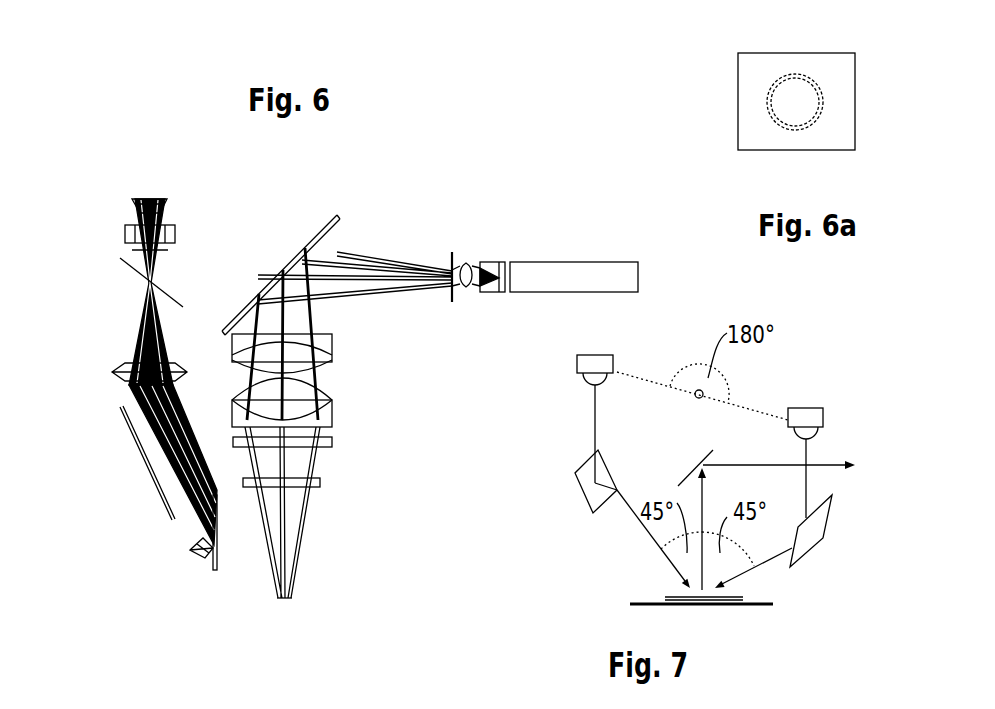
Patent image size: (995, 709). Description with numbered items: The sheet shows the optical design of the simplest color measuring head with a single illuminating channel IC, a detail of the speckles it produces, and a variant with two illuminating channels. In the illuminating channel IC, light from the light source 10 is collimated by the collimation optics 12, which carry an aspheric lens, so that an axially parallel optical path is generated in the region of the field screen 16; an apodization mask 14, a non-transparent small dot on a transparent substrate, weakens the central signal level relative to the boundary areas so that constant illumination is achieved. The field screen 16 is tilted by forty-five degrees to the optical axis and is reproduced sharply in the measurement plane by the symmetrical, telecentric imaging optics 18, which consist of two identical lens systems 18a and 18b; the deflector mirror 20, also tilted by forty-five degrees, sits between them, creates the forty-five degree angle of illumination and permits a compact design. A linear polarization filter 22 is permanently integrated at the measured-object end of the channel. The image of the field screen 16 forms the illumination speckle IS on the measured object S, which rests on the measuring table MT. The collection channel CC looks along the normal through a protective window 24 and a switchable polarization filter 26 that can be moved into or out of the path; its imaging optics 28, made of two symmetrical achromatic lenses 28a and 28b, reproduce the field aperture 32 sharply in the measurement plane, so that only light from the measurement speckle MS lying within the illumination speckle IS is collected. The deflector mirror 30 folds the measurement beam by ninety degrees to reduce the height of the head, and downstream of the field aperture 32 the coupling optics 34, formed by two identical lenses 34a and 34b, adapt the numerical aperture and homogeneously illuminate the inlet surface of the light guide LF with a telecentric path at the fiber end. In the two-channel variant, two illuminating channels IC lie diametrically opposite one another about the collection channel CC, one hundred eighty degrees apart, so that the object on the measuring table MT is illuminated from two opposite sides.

In FIG. 6, the light source 10 is at (132, 203).
In FIG. 6, the collimation optics 12 is at (125, 237).
In FIG. 6, the apodization mask 14 is at (167, 226).
In FIG. 6, the field screen 16 is at (127, 268).
In FIG. 6, the telecentric imaging optics 18 is at (215, 497).
In FIG. 6, the lens system 18a is at (128, 364).
In FIG. 6, the lens system 18b is at (189, 549).
In FIG. 6, the deflector mirror 20 is at (147, 448).
In FIG. 6, the polarization filter 22 is at (213, 570).
In FIG. 6, the protective window 24 is at (321, 482).
In FIG. 6, the polarization filter 26 is at (332, 441).
In FIG. 6, the imaging optics 28 is at (335, 383).
In FIG. 6, the achromatic lens 28a is at (331, 419).
In FIG. 6, the achromatic lens 28b is at (331, 346).
In FIG. 6, the deflector mirror 30 is at (324, 229).
In FIG. 6, the field aperture 32 is at (450, 256).
In FIG. 6, the coupling optics 34 is at (497, 283).
In FIG. 6, the lens 34a is at (466, 259).
In FIG. 6, the lens 34b is at (495, 263).
In FIG. 6, the collection channel CC is at (260, 258).
In FIG. 7, the collection channel CC is at (684, 459).
In FIG. 6, the illuminating channel IC is at (146, 500).
In FIG. 7, the illuminating channel IC is at (605, 521).
In FIG. 6, the light guide LF is at (577, 270).
In FIG. 6, the measured object S is at (292, 598).
In FIG. 6a, the measured object S is at (753, 67).
In FIG. 6a, the measurement speckle MS is at (787, 118).
In FIG. 6a, the illumination speckle IS is at (812, 124).
In FIG. 7, the measuring table MT is at (767, 607).